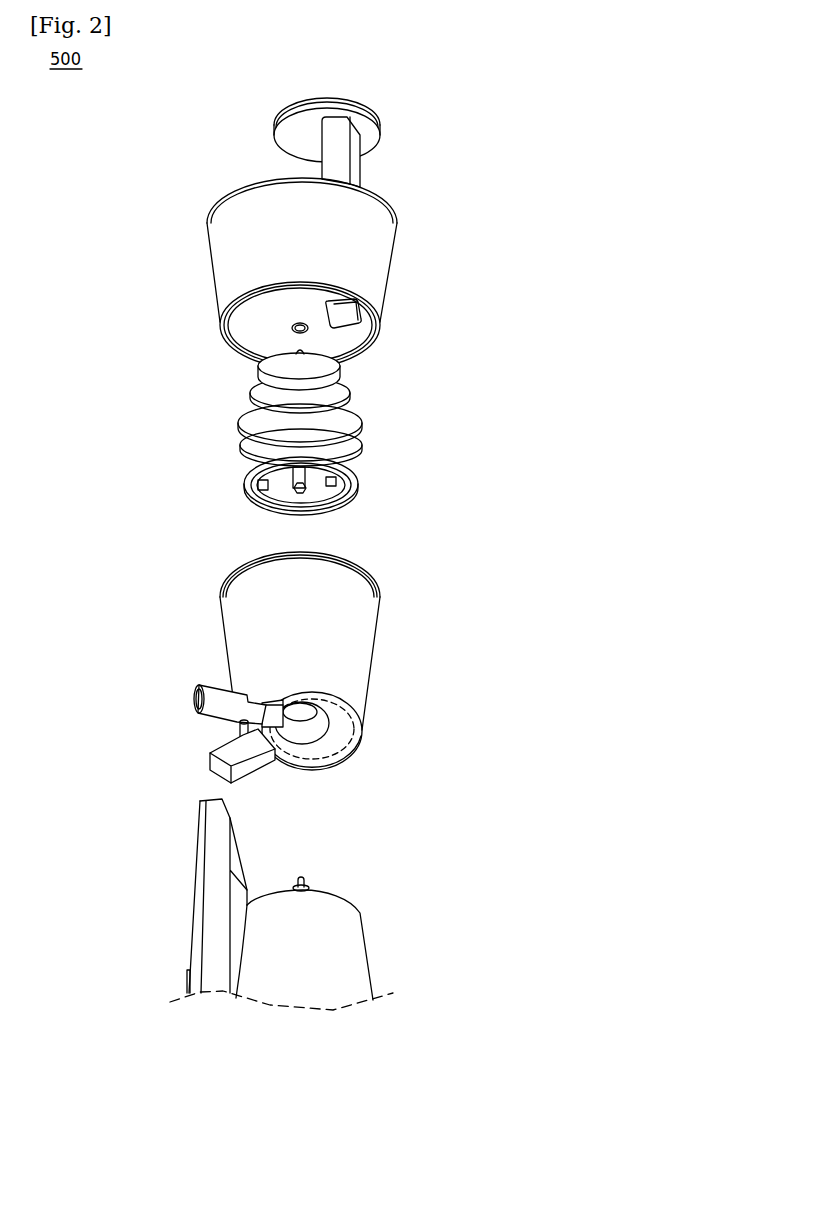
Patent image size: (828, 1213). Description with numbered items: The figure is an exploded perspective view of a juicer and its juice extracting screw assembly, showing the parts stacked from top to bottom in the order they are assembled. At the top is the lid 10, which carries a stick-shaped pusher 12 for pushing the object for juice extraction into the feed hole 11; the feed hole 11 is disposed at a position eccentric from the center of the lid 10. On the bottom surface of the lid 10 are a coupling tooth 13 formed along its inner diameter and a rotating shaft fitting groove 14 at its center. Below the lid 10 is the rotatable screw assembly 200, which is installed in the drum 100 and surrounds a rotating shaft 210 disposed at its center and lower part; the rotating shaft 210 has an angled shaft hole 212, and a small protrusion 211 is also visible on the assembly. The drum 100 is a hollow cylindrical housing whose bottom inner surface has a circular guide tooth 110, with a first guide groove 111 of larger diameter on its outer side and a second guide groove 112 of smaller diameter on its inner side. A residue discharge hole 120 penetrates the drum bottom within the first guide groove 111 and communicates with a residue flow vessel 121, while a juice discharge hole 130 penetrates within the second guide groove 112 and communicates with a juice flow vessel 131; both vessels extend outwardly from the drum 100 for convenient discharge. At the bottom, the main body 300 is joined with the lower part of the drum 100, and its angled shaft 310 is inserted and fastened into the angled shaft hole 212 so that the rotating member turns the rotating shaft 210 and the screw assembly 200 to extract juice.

The lid 10 is at (375, 251).
The feed hole 11 is at (345, 316).
The pusher 12 is at (375, 133).
The coupling tooth 13 is at (233, 359).
The rotating shaft fitting groove 14 is at (290, 327).
The screw assembly 200 is at (275, 435).
The rotating shaft 210 is at (355, 473).
The protrusion 211 is at (303, 350).
The angled shaft hole 212 is at (308, 493).
The drum 100 is at (262, 692).
The guide tooth 110 is at (357, 732).
The first guide groove 111 is at (347, 752).
The second guide groove 112 is at (345, 720).
The residue discharge hole 120 is at (265, 743).
The residue flow vessel 121 is at (213, 753).
The juice discharge hole 130 is at (262, 703).
The juice flow vessel 131 is at (193, 692).
The main body 300 is at (242, 904).
The angled shaft 310 is at (303, 878).